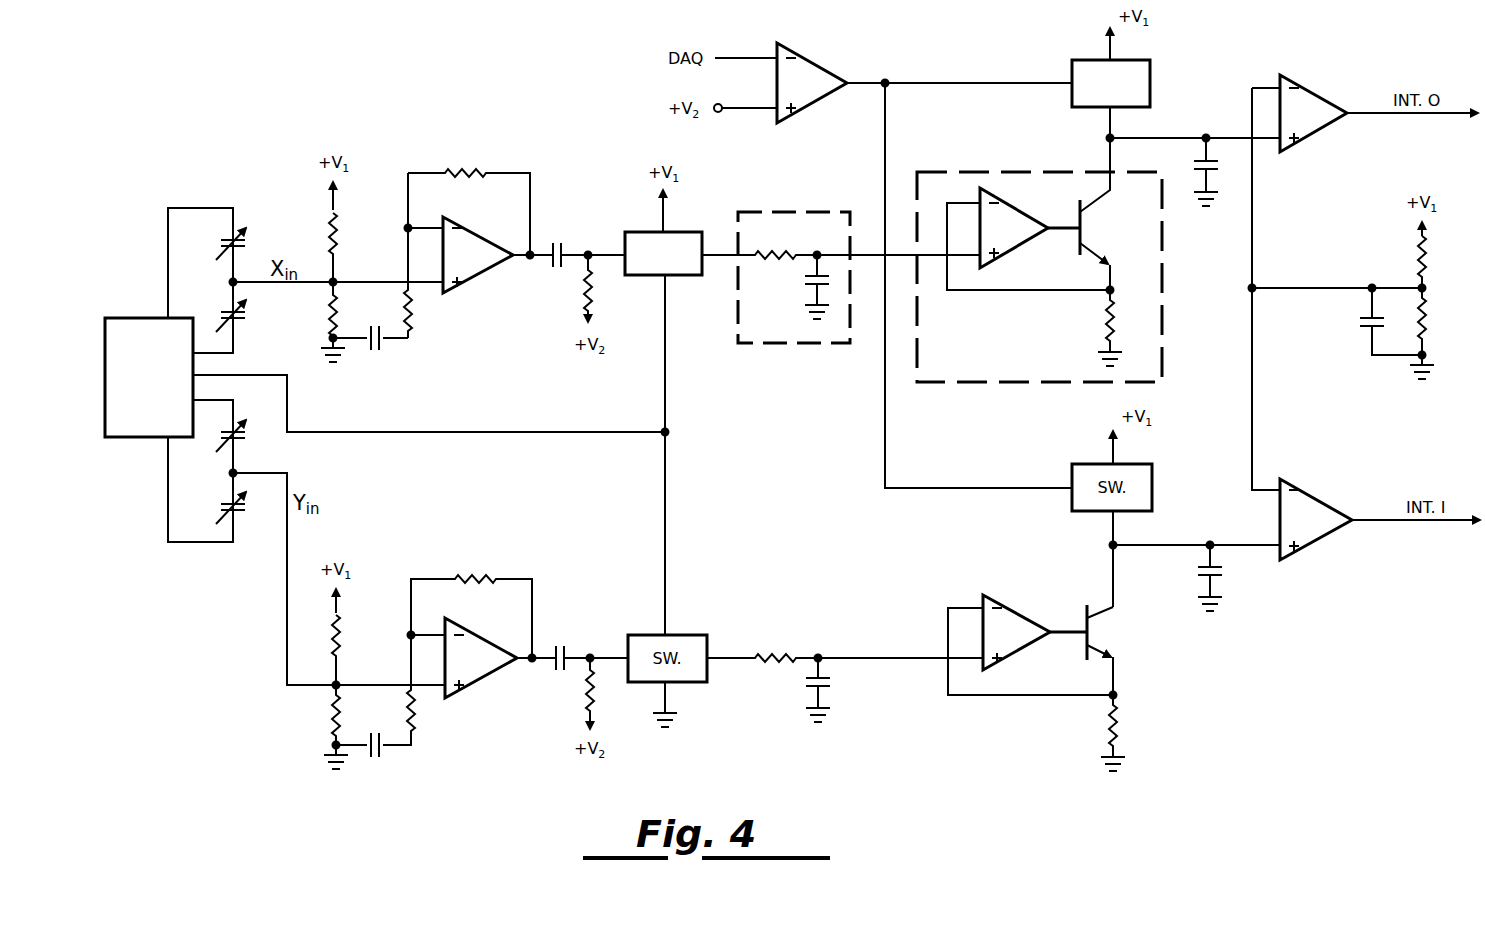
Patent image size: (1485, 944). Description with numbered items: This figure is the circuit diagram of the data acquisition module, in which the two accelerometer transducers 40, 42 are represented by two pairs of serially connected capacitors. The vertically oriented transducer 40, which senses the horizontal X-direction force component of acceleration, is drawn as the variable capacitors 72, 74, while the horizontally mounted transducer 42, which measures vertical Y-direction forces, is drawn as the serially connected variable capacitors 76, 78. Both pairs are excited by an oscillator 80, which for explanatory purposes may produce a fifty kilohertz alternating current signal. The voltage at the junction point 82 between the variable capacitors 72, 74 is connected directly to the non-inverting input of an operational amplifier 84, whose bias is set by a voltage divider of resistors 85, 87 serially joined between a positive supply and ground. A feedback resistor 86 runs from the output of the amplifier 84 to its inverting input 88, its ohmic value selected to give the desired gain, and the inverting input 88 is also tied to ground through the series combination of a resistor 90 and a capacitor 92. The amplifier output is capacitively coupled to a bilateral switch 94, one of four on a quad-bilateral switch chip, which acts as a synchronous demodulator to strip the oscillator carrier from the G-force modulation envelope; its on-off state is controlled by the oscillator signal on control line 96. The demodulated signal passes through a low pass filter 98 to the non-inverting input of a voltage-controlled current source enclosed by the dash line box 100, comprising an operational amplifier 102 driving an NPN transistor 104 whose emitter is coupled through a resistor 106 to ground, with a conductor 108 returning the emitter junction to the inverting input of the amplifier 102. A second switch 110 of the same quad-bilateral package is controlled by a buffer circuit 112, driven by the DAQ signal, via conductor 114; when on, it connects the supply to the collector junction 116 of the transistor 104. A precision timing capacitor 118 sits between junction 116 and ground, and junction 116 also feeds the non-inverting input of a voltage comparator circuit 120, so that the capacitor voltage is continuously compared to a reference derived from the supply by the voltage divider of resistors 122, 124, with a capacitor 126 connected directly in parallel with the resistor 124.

The transducer 40 is at (194, 243).
The transducer 42 is at (207, 484).
The variable capacitor 72 is at (245, 244).
The variable capacitor 74 is at (245, 318).
The variable capacitor 76 is at (245, 437).
The variable capacitor 78 is at (245, 506).
The oscillator 80 is at (131, 318).
The junction point 82 is at (233, 282).
The operational amplifier 84 is at (470, 222).
The resistor 85 is at (340, 232).
The feedback resistor 86 is at (462, 172).
The resistor 87 is at (340, 322).
The inverting input 88 is at (410, 226).
The resistor 90 is at (415, 303).
The capacitor 92 is at (378, 352).
The bilateral switch 94 is at (690, 232).
The control line 96 is at (480, 432).
The low pass filter 98 is at (780, 212).
The voltage-controlled current source 100 is at (982, 171).
The operational amplifier 102 is at (1000, 202).
The NPN transistor 104 is at (1147, 240).
The resistor 106 is at (1103, 325).
The conductor 108 is at (998, 297).
The switch 110 is at (1145, 60).
The buffer circuit 112 is at (813, 60).
The conductor 114 is at (922, 83).
The collector junction 116 is at (1115, 135).
The precision timing capacitor 118 is at (1192, 165).
The voltage comparator circuit 120 is at (1318, 82).
The resistor 122 is at (1418, 250).
The resistor 124 is at (1456, 308).
The capacitor 126 is at (1360, 322).